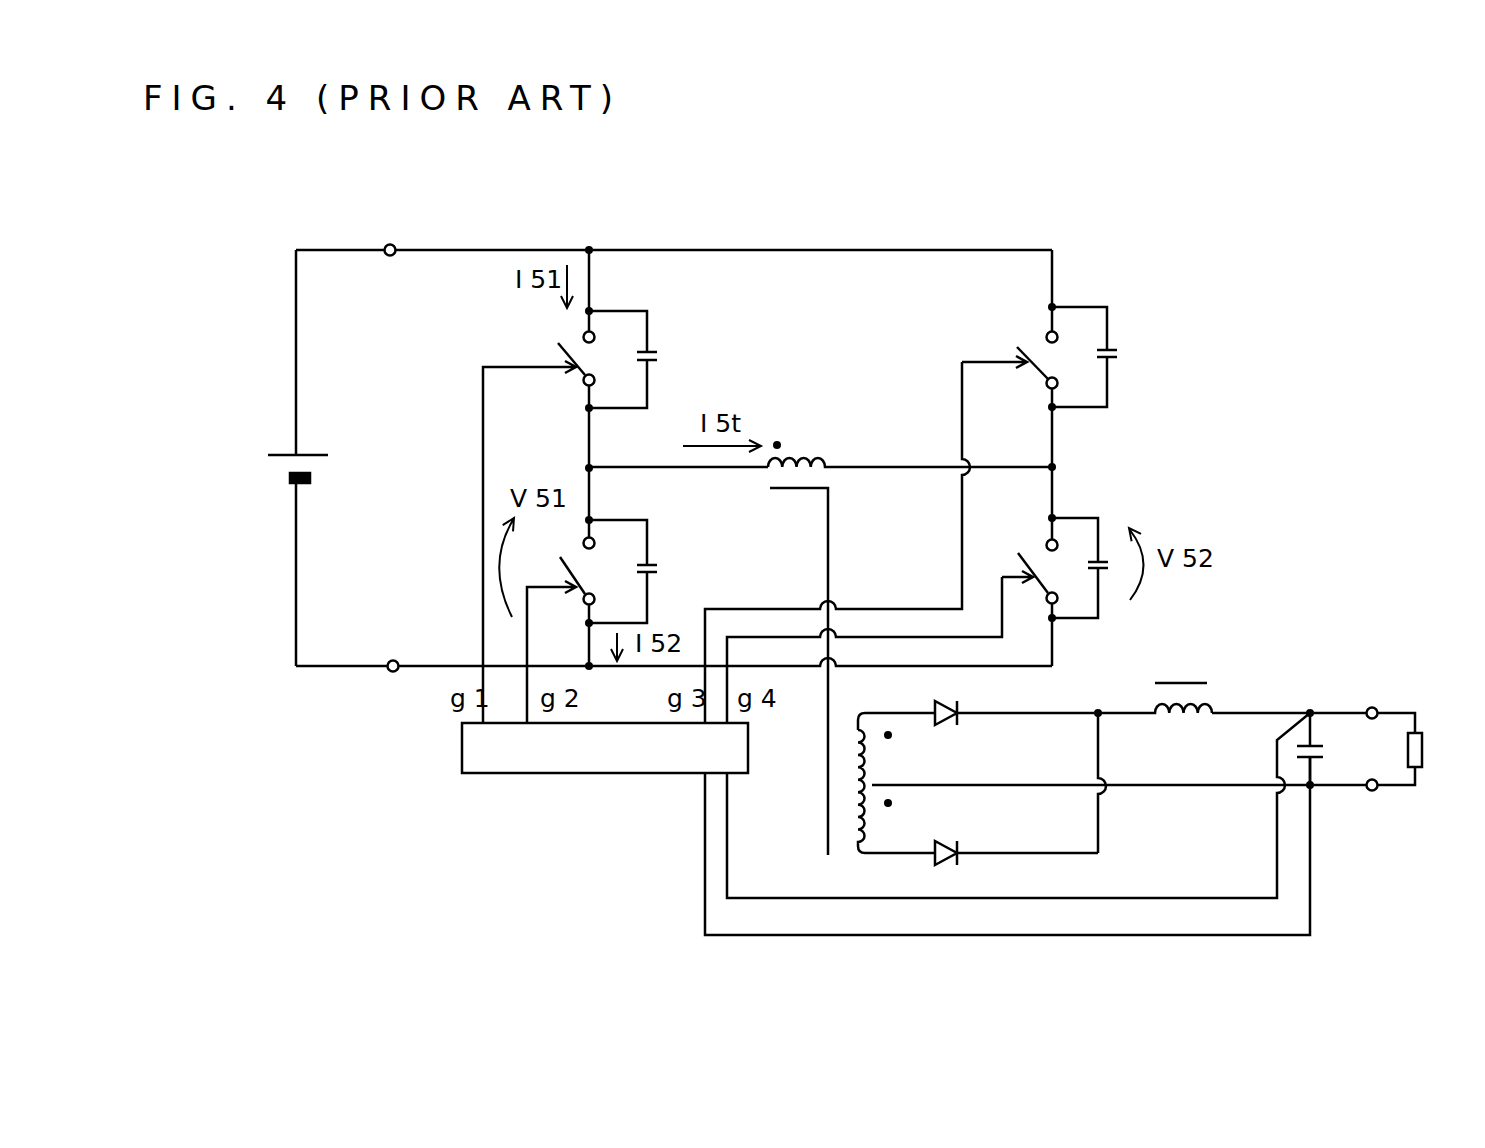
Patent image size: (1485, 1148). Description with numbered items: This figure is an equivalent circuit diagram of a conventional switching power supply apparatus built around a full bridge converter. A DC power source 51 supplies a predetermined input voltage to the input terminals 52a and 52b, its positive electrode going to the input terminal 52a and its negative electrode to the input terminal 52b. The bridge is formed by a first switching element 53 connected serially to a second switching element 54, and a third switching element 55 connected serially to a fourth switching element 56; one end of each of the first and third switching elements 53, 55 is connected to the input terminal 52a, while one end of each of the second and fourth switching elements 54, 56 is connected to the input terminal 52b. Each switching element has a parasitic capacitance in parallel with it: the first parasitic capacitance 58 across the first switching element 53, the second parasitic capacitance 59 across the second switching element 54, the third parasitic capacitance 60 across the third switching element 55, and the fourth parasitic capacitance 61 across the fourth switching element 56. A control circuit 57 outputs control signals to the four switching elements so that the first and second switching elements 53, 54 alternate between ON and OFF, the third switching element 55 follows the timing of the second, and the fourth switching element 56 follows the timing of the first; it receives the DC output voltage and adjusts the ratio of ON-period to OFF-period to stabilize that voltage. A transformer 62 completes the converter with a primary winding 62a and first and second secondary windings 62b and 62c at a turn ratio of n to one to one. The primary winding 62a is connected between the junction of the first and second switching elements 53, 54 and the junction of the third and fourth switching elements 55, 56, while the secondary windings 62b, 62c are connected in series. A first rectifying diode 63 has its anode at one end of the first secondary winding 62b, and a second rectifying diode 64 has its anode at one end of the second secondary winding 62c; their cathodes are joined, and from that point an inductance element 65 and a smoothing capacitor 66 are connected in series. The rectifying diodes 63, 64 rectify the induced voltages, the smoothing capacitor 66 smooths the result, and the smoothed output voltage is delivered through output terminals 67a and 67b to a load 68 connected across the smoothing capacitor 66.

The DC power source 51 is at (280, 455).
The input terminal 52a is at (395, 244).
The input terminal 52b is at (398, 660).
The first switching element 53 is at (556, 348).
The second switching element 54 is at (580, 603).
The third switching element 55 is at (1030, 347).
The fourth switching element 56 is at (1035, 560).
The control circuit 57 is at (520, 777).
The first parasitic capacitance 58 is at (637, 360).
The second parasitic capacitance 59 is at (653, 572).
The third parasitic capacitance 60 is at (1104, 368).
The fourth parasitic capacitance 61 is at (1092, 572).
The transformer 62 is at (910, 632).
The primary winding 62a is at (805, 458).
The first secondary winding 62b is at (880, 748).
The second secondary winding 62c is at (880, 826).
The first rectifying diode 63 is at (933, 708).
The second rectifying diode 64 is at (933, 862).
The inductance element 65 is at (1193, 683).
The smoothing capacitor 66 is at (1318, 742).
The output terminal 67a is at (1378, 706).
The output terminal 67b is at (1378, 793).
The load 68 is at (1424, 740).